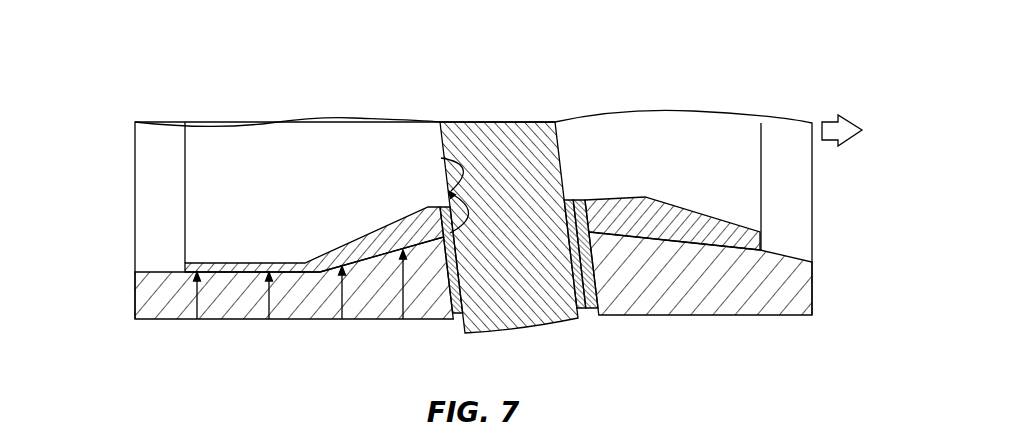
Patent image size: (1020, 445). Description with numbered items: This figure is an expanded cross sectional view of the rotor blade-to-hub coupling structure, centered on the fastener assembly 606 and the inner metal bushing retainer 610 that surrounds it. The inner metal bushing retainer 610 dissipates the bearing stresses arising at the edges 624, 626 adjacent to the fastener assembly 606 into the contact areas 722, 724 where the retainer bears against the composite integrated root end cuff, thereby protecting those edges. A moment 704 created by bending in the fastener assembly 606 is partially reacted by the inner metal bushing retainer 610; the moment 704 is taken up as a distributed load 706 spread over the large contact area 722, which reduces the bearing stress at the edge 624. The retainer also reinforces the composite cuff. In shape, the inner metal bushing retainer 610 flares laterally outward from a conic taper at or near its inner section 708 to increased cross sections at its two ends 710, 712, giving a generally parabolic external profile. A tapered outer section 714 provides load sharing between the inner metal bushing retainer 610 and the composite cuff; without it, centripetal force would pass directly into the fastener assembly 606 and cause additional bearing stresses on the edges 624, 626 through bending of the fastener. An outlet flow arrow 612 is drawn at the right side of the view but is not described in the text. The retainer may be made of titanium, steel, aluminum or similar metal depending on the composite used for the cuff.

The end 710 is at (183, 144).
The inner metal bushing retainer 610 is at (217, 178).
The moment 704 is at (441, 142).
The inner section 708 is at (440, 107).
The outlet flow 612 is at (836, 118).
The end 712 is at (762, 193).
The contact area 724 is at (632, 232).
The tapered outer section 714 is at (738, 250).
The edge 626 is at (591, 235).
The fastener assembly 606 is at (499, 333).
The edge 624 is at (433, 238).
The contact area 722 is at (246, 277).
The distributed load 706 is at (197, 322).